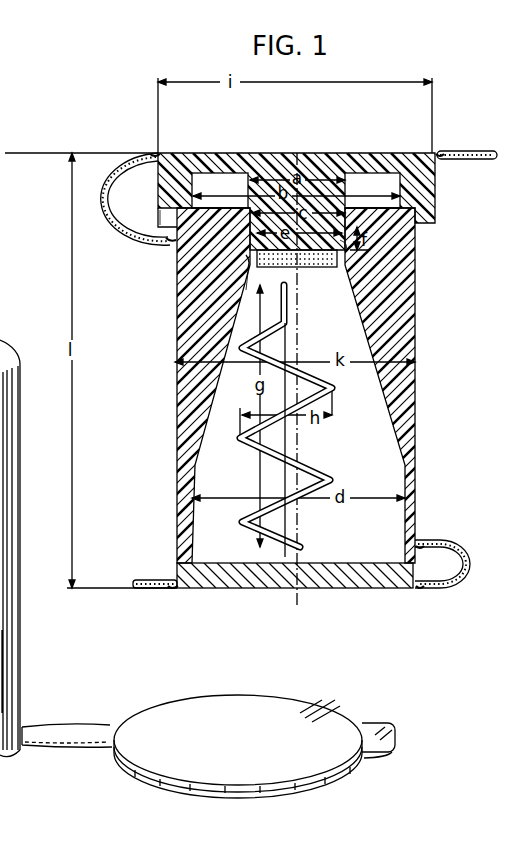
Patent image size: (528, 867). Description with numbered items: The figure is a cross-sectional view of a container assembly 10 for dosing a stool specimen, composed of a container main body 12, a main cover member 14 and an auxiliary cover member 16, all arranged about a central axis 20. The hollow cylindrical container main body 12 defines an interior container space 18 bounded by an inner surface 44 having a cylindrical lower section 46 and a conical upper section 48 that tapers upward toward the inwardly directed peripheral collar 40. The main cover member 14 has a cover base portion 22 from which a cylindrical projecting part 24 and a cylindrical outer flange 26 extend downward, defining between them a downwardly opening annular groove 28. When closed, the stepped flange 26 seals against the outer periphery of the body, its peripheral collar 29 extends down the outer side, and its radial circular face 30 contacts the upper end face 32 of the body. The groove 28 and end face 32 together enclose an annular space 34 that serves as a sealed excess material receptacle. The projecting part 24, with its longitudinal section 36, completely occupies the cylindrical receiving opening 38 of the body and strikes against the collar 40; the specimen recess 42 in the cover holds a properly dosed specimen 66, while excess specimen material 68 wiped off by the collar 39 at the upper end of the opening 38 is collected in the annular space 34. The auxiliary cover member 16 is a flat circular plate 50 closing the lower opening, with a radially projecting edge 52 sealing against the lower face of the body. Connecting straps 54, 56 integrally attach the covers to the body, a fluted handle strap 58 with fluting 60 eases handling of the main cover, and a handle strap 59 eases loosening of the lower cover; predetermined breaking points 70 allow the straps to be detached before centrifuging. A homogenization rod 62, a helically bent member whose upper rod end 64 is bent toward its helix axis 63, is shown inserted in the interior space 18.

The container assembly 10 is at (160, 321).
The container main body 12 is at (174, 399).
The main cover member 14 is at (280, 152).
The auxiliary cover member 16 is at (269, 680).
The interior container space 18 is at (184, 503).
The central axis 20 is at (300, 606).
The cover base portion 22 is at (203, 155).
The cylindrical projecting part 24 is at (343, 180).
The cylindrical outer flange 26 is at (433, 185).
The annular groove 28 is at (378, 175).
The peripheral collar 29 is at (430, 228).
The radial circular face 30 is at (162, 221).
The upper end face 32 is at (213, 227).
The annular space 34 is at (190, 158).
The longitudinal section 36 is at (352, 272).
The cylindrical receiving opening 38 is at (245, 282).
The collar 39 is at (243, 264).
The inwardly directed peripheral collar 40 is at (242, 301).
The specimen recess 42 is at (300, 270).
The inner surface 44 is at (400, 440).
The cylindrical lower section 46 is at (404, 516).
The conical upper section 48 is at (380, 400).
The flat circular plate 50 is at (237, 590).
The edge 52 is at (178, 590).
The connecting strap 54 is at (108, 172).
The connecting strap 56 is at (468, 565).
The handle strap 58 is at (470, 150).
The handle strap 59 is at (142, 578).
The fluting 60 is at (478, 161).
The homogenization rod 62 is at (252, 533).
The helix axis 63 is at (283, 472).
The upper rod end 64 is at (291, 306).
The dosed specimen 66 is at (345, 245).
The excess specimen material 68 is at (246, 178).
The predetermined breaking points 70 is at (155, 154).